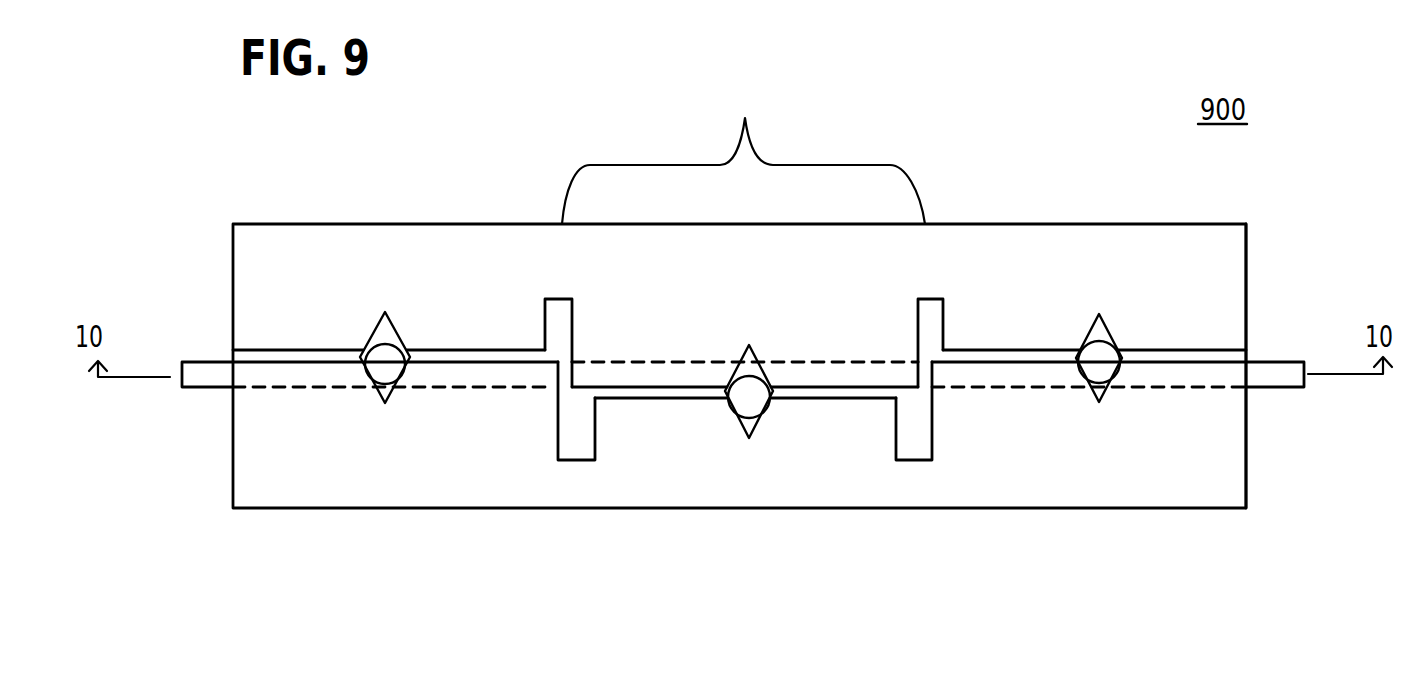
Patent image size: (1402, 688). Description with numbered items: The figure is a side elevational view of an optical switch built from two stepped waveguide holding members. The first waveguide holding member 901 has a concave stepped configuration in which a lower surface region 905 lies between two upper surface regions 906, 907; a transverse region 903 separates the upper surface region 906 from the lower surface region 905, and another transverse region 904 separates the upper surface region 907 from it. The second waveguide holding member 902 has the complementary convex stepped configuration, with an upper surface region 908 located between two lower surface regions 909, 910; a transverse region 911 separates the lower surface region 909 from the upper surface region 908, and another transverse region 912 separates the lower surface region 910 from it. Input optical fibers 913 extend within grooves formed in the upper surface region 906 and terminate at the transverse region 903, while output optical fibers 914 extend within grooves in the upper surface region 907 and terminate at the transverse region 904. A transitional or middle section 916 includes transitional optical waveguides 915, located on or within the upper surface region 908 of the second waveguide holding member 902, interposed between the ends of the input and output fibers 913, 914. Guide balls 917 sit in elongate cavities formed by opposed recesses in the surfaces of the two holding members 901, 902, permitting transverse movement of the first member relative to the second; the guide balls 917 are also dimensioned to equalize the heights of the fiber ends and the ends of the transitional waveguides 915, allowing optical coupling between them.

The first waveguide holding member 901 is at (1225, 508).
The second waveguide holding member 902 is at (1233, 272).
The transverse region 903 is at (580, 440).
The transverse region 904 is at (912, 440).
The lower surface region 905 is at (833, 400).
The upper surface region 906 is at (460, 406).
The upper surface region 907 is at (1153, 405).
The upper surface region 908 is at (799, 353).
The lower surface region 909 is at (280, 348).
The lower surface region 910 is at (1020, 348).
The transverse region 911 is at (557, 307).
The transverse region 912 is at (928, 302).
The input optical fibers 913 is at (208, 377).
The output optical fibers 914 is at (1286, 374).
The transitional optical waveguides 915 is at (670, 373).
The transitional or middle section 916 is at (745, 118).
The guide balls 917 is at (383, 357).